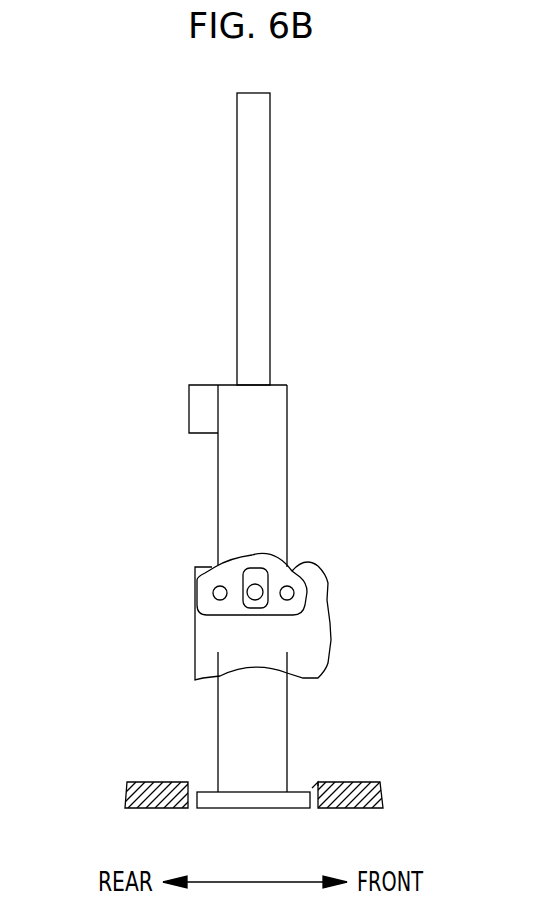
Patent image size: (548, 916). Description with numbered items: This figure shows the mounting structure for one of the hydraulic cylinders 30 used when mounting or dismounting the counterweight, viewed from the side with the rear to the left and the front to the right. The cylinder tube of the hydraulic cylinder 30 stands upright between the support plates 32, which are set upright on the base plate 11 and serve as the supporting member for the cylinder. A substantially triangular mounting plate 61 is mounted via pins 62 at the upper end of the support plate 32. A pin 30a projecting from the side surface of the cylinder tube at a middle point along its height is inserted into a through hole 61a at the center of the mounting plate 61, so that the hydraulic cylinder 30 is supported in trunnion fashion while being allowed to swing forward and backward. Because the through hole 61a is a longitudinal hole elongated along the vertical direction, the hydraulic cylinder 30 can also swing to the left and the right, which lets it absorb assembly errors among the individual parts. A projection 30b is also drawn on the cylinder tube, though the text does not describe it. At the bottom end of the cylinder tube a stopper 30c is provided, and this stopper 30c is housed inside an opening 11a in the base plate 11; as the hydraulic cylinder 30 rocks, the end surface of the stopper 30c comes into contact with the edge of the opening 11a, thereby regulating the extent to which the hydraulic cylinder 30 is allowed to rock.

The hydraulic cylinder 30 is at (287, 432).
The pin 30a is at (255, 595).
The engaging projection of support leg 30b is at (202, 402).
The stopper 30c is at (257, 808).
The support plate 32 is at (195, 632).
The mounting plate 61 is at (304, 601).
The through hole 61a is at (247, 573).
The pin 62 is at (214, 589).
The base plate 11 is at (360, 780).
The opening 11a is at (313, 786).